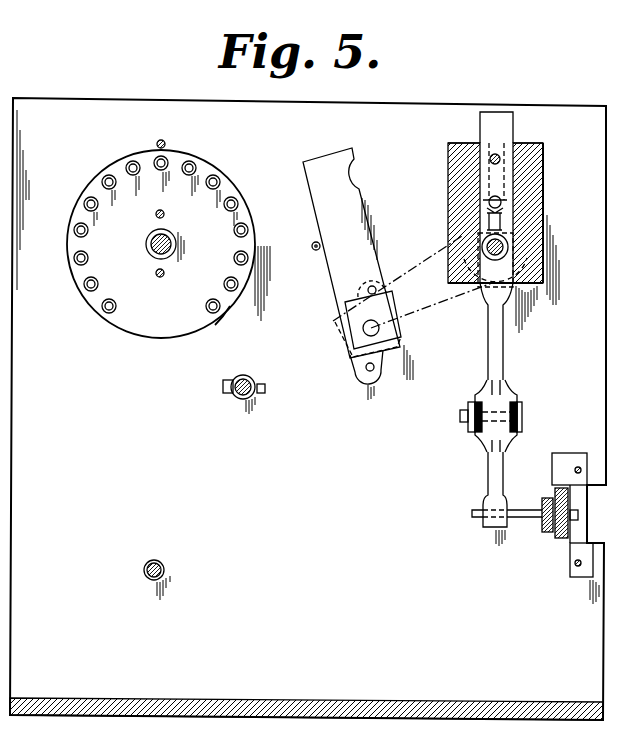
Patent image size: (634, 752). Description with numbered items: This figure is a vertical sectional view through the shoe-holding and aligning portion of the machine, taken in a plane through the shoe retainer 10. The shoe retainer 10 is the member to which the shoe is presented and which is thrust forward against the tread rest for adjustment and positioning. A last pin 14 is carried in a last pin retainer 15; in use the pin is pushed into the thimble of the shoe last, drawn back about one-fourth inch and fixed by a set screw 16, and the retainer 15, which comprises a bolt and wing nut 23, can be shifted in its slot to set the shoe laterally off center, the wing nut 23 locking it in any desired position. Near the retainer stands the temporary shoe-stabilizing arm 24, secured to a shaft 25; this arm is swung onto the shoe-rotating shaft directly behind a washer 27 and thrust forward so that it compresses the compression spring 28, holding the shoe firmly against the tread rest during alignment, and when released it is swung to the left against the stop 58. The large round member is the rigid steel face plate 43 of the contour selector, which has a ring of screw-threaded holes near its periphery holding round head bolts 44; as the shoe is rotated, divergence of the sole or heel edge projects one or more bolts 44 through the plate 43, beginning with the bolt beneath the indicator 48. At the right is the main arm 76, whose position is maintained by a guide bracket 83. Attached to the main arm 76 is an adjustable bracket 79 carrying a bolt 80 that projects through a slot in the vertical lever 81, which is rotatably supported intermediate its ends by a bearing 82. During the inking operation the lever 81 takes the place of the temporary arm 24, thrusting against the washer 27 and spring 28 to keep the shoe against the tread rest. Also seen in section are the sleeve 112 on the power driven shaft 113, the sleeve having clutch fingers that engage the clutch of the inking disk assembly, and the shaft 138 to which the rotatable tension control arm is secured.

The shoe retainer 10 is at (545, 229).
The last pin 14 is at (491, 156).
The last pin retainer 15 is at (478, 168).
The set screw 16 is at (516, 153).
The wing nut 23 is at (507, 201).
The shoe-stabilizing arm 24 is at (370, 253).
The shaft 25 is at (378, 324).
The washer 27 is at (380, 288).
The compression spring 28 is at (468, 290).
The rigid steel face plate 43 is at (163, 318).
The round head bolts 44 is at (222, 321).
The indicator 48 is at (165, 141).
The stop 58 is at (300, 246).
The main arm 76 is at (564, 540).
The adjustable bracket 79 is at (546, 534).
The bolt 80 is at (516, 512).
The vertical lever 81 is at (500, 474).
The bearing 82 is at (516, 432).
The guide bracket 83 is at (562, 462).
The sleeve 112 is at (256, 380).
The power driven shaft 113 is at (236, 397).
The shaft 138 is at (160, 560).